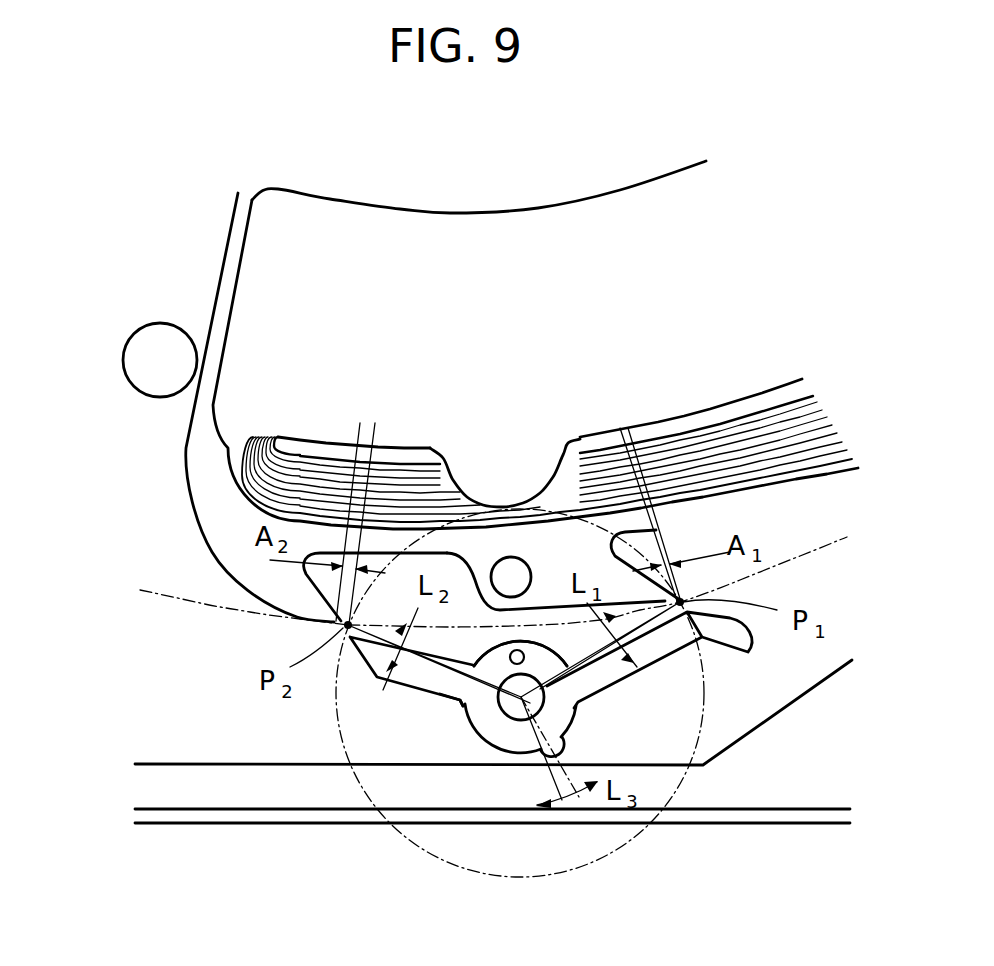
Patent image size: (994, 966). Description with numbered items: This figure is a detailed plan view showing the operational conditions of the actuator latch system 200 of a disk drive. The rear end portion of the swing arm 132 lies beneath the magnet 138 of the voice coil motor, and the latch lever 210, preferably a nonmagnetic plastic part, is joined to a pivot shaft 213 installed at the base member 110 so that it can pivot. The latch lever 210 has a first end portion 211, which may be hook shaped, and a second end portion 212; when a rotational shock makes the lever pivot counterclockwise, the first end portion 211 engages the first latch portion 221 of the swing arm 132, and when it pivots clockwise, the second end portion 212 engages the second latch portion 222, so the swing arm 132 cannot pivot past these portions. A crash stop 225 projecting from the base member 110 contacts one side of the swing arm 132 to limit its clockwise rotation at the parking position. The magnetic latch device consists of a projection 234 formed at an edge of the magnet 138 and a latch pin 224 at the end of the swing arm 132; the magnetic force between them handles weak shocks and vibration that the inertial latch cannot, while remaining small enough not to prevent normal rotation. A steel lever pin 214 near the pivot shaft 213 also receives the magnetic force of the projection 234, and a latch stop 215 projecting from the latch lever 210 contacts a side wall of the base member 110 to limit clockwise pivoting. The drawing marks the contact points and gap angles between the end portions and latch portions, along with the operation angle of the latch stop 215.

The base member 110 is at (718, 792).
The swing arm 132 is at (197, 457).
The magnet 138 is at (542, 227).
The actuator latch system 200 is at (672, 697).
The latch lever 210 is at (483, 723).
The first end portion 211 is at (735, 642).
The second end portion 212 is at (372, 655).
The pivot shaft 213 is at (513, 710).
The lever pin 214 is at (460, 700).
The latch stop 215 is at (558, 748).
The first latch portion 221 is at (690, 596).
The second latch portion 222 is at (290, 593).
The latch pin 224 is at (500, 573).
The crash stop 225 is at (132, 362).
The projection 234 is at (520, 477).